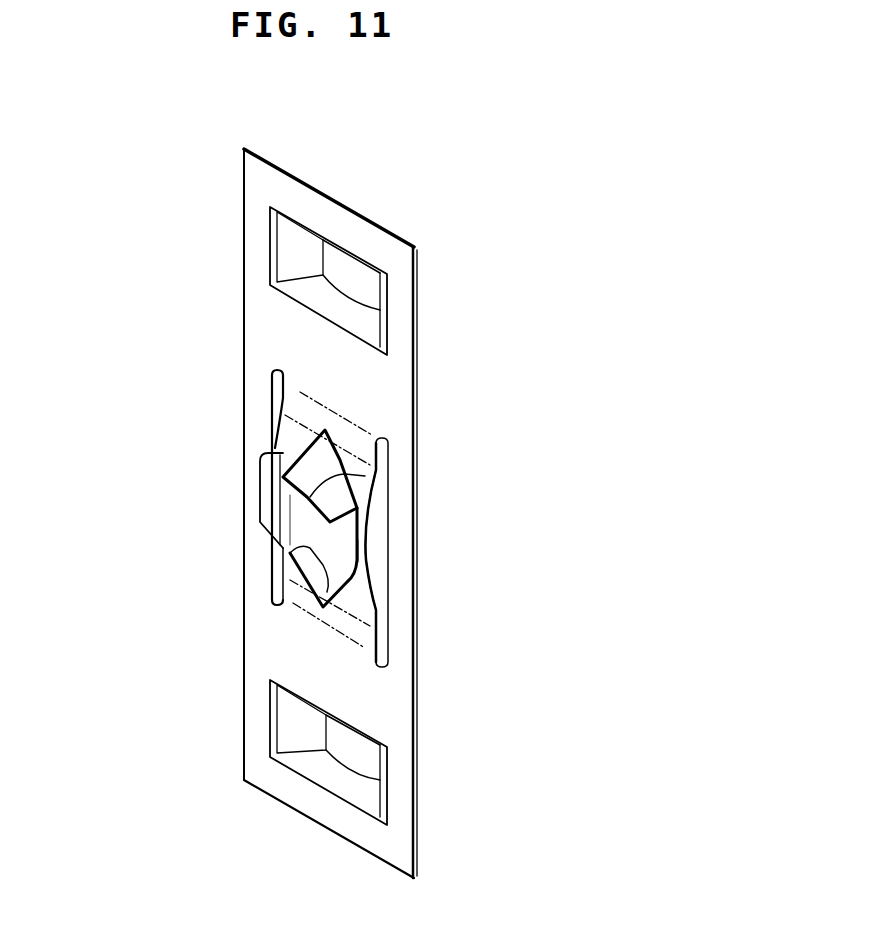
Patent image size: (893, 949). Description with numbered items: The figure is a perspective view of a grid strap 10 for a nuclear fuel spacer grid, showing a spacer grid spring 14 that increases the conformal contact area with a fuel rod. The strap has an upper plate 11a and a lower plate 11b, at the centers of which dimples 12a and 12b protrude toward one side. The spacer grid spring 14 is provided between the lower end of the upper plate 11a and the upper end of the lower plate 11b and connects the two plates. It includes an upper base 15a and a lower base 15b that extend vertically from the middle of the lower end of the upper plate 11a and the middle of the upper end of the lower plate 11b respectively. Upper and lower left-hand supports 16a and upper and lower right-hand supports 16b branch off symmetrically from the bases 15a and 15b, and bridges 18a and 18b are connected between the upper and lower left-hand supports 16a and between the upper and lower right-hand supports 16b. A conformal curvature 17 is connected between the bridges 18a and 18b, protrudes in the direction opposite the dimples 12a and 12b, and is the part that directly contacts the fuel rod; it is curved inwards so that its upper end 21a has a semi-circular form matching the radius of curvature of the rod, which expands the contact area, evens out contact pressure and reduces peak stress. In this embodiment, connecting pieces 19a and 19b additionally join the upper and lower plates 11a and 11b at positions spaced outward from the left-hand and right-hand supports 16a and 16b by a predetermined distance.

The grid strap 10 is at (478, 325).
The upper plate 11a is at (257, 213).
The lower plate 11b is at (262, 733).
The dimple 12a is at (338, 270).
The dimple 12b is at (355, 755).
The spacer grid spring 14 is at (367, 556).
The upper base 15a is at (300, 393).
The lower base 15b is at (320, 607).
The left-hand support 16a is at (262, 492).
The right-hand support 16b is at (365, 503).
The conformal curvature 17 is at (313, 523).
The bridge 18a is at (283, 458).
The bridge 18b is at (370, 587).
The connecting piece 19a is at (250, 478).
The connecting piece 19b is at (403, 622).
The upper end 21a is at (377, 475).